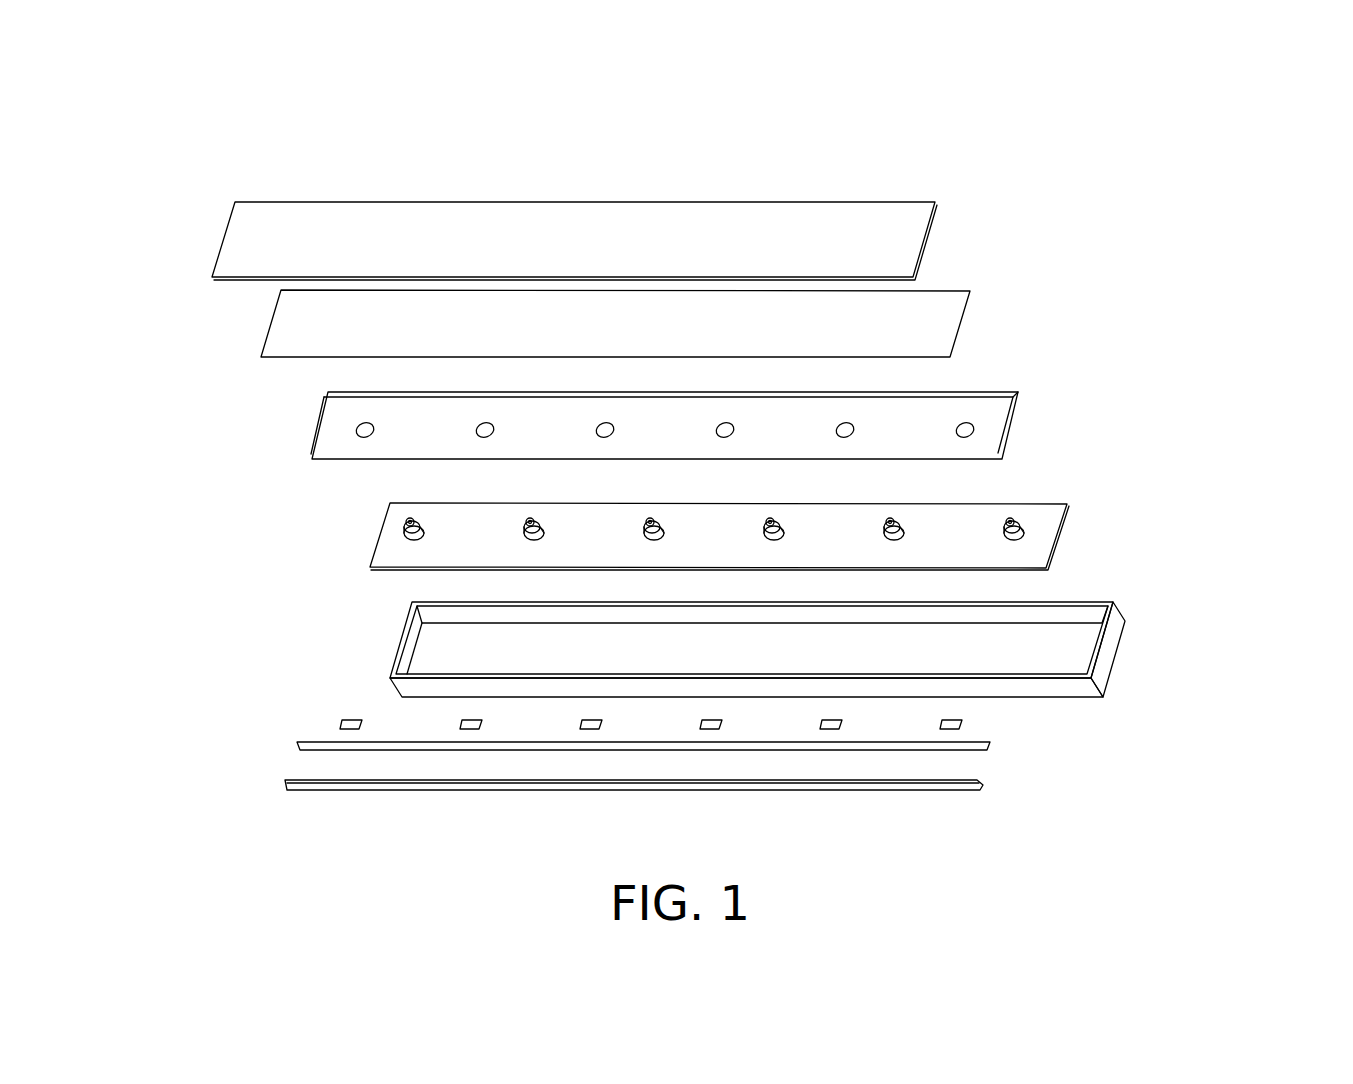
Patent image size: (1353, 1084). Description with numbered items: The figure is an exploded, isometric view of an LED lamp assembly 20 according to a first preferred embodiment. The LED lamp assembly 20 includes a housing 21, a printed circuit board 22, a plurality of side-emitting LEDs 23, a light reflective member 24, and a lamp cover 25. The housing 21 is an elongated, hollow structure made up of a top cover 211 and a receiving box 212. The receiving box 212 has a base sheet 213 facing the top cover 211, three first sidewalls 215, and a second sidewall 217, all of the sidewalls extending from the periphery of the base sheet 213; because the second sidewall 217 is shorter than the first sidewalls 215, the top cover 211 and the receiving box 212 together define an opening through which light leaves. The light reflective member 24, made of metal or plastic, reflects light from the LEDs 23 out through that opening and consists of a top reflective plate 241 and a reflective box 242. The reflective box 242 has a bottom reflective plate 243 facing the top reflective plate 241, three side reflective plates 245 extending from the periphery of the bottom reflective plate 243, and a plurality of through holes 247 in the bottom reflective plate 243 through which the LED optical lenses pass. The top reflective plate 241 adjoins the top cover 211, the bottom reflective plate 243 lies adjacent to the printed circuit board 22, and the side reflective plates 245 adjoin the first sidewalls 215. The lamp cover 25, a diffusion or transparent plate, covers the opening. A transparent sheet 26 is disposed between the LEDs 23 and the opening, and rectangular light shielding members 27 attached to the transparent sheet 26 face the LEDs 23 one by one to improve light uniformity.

The LED lamp assembly 20 is at (937, 138).
The housing 21 is at (1297, 306).
The top cover 211 is at (907, 232).
The receiving box 212 is at (1215, 526).
The base sheet 213 is at (1072, 637).
The first sidewalls 215 is at (1108, 641).
The second sidewall 217 is at (1045, 682).
The printed circuit board 22 is at (392, 557).
The side-emitting LEDs 23 is at (410, 522).
The light reflective member 24 is at (95, 318).
The top reflective plate 241 is at (292, 335).
The reflective box 242 is at (169, 372).
The bottom reflective plate 243 is at (340, 407).
The side reflective plates 245 is at (313, 440).
The through holes 247 is at (365, 430).
The lamp cover 25 is at (320, 781).
The transparent sheet 26 is at (330, 742).
The light shielding members 27 is at (348, 718).